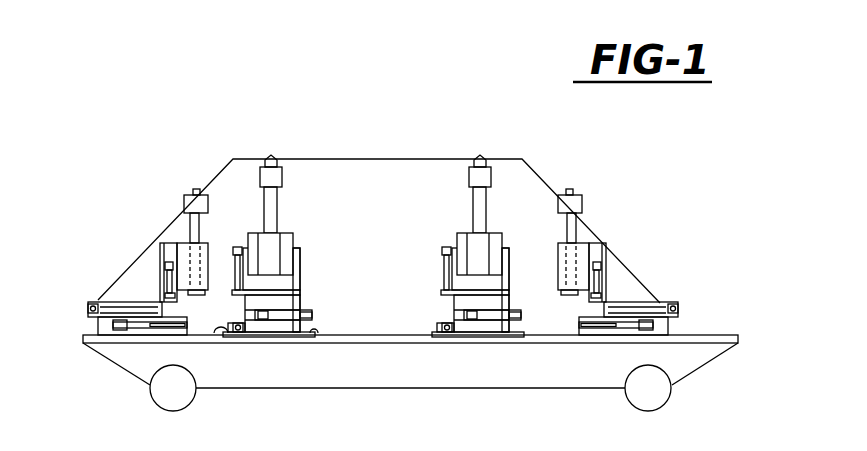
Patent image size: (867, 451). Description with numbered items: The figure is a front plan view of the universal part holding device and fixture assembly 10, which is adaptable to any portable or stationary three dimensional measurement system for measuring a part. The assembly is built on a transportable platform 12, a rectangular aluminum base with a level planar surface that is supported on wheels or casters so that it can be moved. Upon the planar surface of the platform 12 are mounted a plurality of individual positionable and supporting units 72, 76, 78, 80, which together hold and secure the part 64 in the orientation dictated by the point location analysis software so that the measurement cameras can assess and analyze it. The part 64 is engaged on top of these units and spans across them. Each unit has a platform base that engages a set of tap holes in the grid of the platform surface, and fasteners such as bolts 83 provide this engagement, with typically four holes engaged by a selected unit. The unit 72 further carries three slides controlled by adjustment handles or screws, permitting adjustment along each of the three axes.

The universal part holding device and fixture assembly 10 is at (158, 78).
The transportable platform 12 is at (707, 324).
The part 64 is at (323, 159).
The positionable and supporting unit 72 is at (140, 212).
The positionable and supporting unit 76 is at (320, 229).
The positionable and supporting unit 78 is at (425, 266).
The positionable and supporting unit 80 is at (621, 218).
The bolt 83 is at (314, 331).